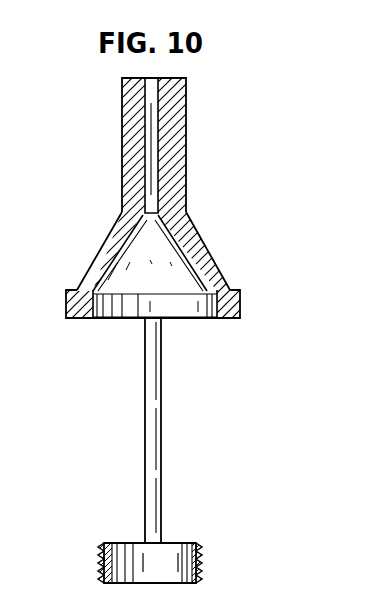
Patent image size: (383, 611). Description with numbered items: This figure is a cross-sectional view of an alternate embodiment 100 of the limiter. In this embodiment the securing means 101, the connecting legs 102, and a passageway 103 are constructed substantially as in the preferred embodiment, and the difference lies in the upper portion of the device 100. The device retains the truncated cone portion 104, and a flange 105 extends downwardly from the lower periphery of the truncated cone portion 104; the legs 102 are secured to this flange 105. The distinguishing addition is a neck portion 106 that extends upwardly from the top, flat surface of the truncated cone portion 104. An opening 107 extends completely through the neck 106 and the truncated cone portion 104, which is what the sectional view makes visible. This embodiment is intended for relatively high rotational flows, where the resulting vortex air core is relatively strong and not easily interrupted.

The alternate embodiment 100 is at (245, 183).
The securing means 101 is at (198, 545).
The connecting legs 102 is at (153, 457).
The passageway 103 is at (115, 412).
The truncated cone portion 104 is at (207, 257).
The flange 105 is at (240, 307).
The neck portion 106 is at (187, 155).
The opening 107 is at (151, 126).